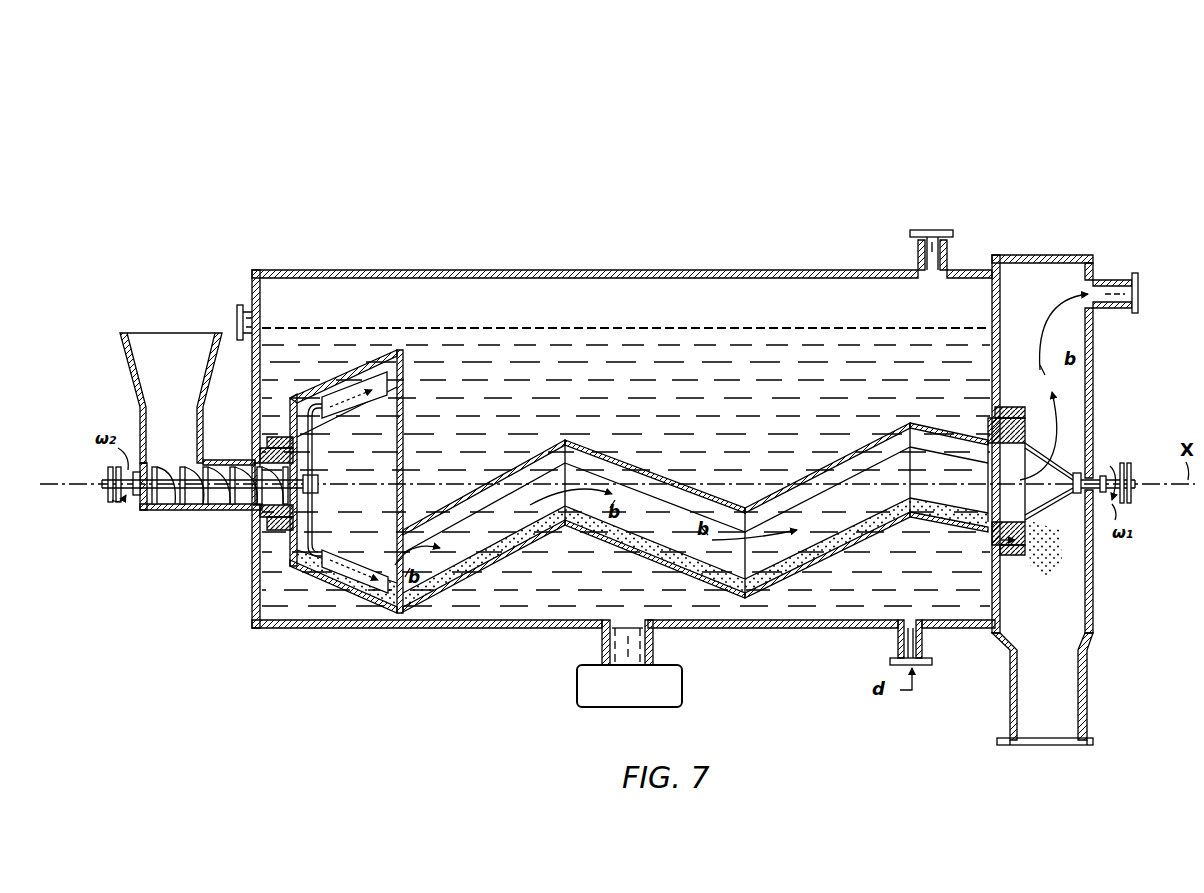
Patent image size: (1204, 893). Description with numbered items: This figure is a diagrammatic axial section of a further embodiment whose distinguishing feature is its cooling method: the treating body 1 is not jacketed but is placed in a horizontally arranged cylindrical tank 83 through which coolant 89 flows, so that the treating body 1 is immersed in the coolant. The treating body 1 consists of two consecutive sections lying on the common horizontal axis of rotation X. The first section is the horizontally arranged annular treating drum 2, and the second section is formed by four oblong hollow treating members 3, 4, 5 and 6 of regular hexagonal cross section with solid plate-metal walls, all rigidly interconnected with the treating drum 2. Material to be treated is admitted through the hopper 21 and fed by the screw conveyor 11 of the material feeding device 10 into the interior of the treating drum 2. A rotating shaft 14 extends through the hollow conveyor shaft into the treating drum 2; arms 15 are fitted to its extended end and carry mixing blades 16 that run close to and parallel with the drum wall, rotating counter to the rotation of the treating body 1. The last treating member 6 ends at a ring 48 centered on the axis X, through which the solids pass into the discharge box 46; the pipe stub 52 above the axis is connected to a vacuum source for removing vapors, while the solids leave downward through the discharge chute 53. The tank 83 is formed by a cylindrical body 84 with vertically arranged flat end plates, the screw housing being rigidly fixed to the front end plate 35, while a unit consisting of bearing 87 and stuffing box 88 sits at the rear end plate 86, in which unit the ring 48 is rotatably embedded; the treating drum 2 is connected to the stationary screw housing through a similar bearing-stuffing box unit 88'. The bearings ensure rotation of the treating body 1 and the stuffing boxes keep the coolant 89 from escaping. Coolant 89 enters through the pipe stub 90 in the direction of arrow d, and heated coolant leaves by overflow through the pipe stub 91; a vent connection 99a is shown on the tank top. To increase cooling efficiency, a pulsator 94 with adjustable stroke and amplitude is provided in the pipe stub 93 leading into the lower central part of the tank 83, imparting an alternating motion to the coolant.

The treating body 1 is at (690, 430).
The treating drum 2 is at (407, 404).
The treating member 3 is at (512, 465).
The treating member 4 is at (622, 453).
The treating member 5 is at (822, 464).
The treating member 6 is at (946, 422).
The material feeding device 10 is at (157, 514).
The screw conveyor 11 is at (225, 506).
The rotating shaft 14 is at (106, 503).
The arms 15 is at (312, 454).
The mixing blades 16 is at (350, 390).
The hopper 21 is at (124, 352).
The tank end wall 35 is at (252, 395).
The discharge box 46 is at (1097, 372).
The ring 48 is at (988, 406).
The pipe stub 52 is at (1128, 277).
The discharge chute 53 is at (1088, 692).
The cylindrical tank 83 is at (672, 268).
The cylindrical body 84 is at (513, 269).
The rear end plate 86 is at (991, 300).
The bearing 87 is at (1018, 556).
The stuffing box 88 is at (1009, 408).
The bearing-stuffing box unit 88' is at (273, 465).
The coolant 89 is at (584, 327).
The pipe stub 90 is at (930, 648).
The pipe stub 91 is at (239, 308).
The pipe stub 93 is at (655, 642).
The pulsator 94 is at (626, 708).
The vent connection 99a is at (930, 229).